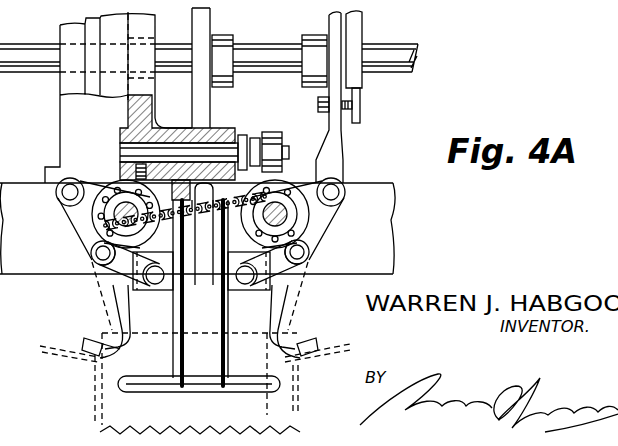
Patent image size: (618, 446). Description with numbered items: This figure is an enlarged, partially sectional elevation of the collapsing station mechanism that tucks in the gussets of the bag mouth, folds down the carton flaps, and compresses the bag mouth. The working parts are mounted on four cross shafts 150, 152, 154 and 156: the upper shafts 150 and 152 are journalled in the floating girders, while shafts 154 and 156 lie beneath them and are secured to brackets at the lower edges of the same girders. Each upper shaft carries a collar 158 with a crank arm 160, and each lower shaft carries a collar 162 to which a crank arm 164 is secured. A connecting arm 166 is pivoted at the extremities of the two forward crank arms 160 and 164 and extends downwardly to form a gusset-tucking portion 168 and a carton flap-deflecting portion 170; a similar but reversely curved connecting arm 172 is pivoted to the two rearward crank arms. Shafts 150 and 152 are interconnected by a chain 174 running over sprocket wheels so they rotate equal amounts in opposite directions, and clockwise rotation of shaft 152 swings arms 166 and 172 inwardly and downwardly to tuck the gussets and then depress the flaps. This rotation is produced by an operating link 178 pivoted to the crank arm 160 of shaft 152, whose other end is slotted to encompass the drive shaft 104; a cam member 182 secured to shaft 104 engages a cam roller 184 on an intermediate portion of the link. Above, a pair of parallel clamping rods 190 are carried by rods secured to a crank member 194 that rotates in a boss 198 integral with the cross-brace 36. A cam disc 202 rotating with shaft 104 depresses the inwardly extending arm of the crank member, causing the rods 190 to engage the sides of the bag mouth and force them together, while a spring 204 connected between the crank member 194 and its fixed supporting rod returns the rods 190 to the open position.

The cross-brace 36 is at (62, 106).
The drive shaft 104 is at (58, 50).
The cross shaft 150 is at (120, 200).
The cross shaft 152 is at (283, 213).
The cross shaft 154 is at (155, 288).
The cross shaft 156 is at (243, 288).
The collar 158 is at (137, 232).
The crank arm 160 is at (82, 208).
The collar 162 is at (182, 289).
The crank arm 164 is at (104, 264).
The connecting arm 166 is at (90, 237).
The gusset-tucking portion 168 is at (126, 357).
The carton flap-deflecting portion 170 is at (100, 352).
The connecting arm 172 is at (280, 303).
The chain 174 is at (208, 216).
The operating link 178 is at (333, 166).
The cam member 182 is at (358, 32).
The cam roller 184 is at (358, 107).
The clamping rods 190 is at (146, 386).
The crank member 194 is at (190, 104).
The boss 198 is at (125, 140).
The cam disc 202 is at (210, 103).
The spring 204 is at (258, 140).